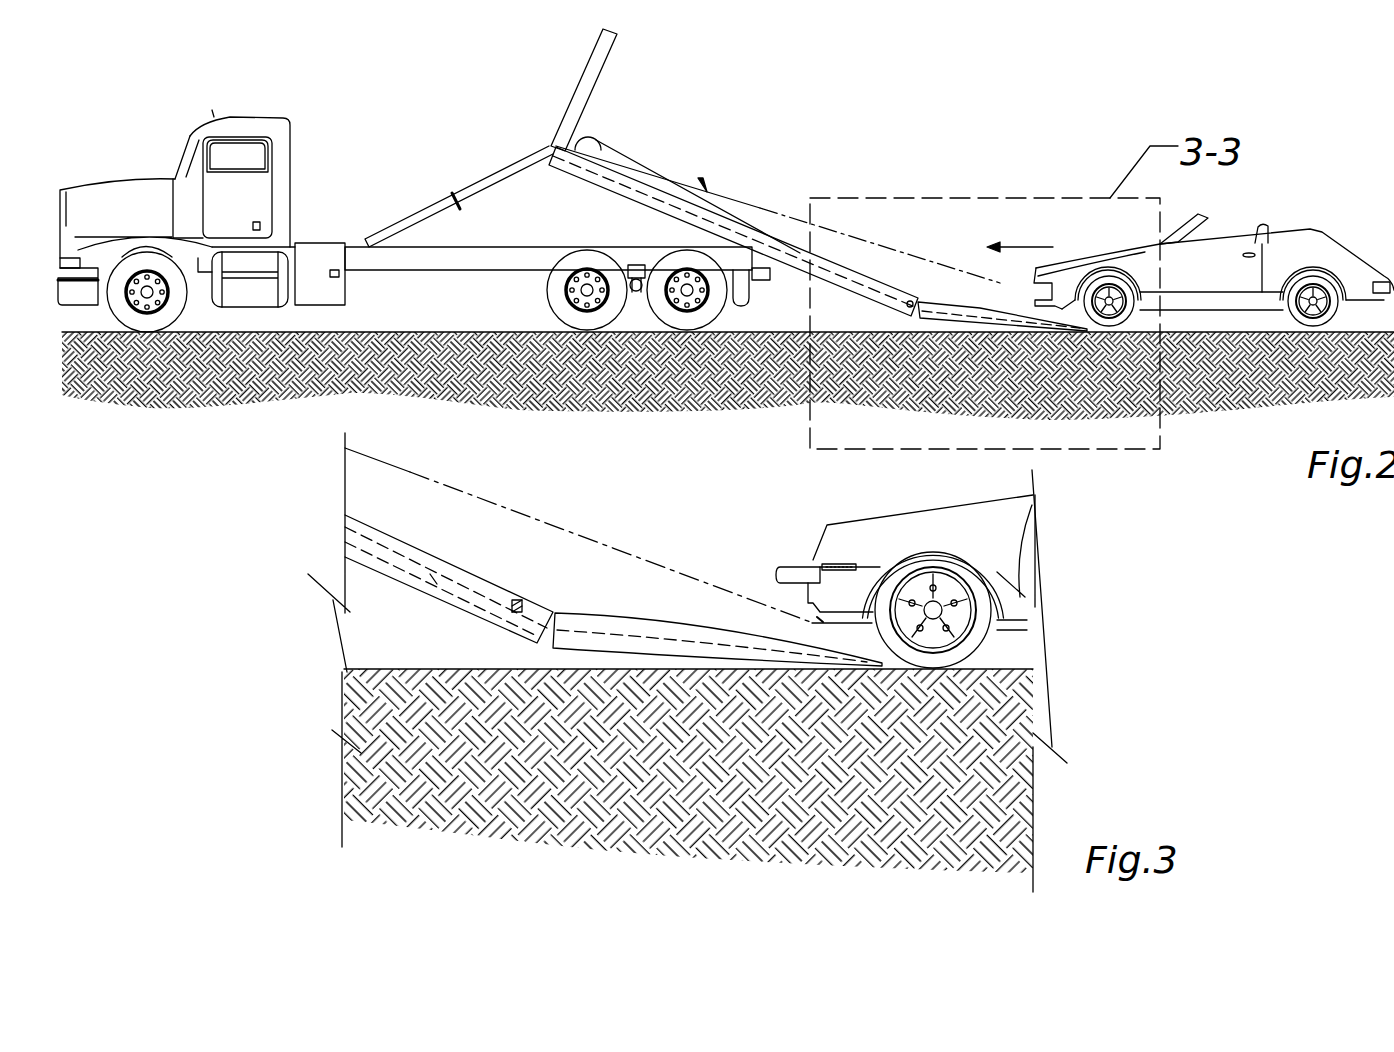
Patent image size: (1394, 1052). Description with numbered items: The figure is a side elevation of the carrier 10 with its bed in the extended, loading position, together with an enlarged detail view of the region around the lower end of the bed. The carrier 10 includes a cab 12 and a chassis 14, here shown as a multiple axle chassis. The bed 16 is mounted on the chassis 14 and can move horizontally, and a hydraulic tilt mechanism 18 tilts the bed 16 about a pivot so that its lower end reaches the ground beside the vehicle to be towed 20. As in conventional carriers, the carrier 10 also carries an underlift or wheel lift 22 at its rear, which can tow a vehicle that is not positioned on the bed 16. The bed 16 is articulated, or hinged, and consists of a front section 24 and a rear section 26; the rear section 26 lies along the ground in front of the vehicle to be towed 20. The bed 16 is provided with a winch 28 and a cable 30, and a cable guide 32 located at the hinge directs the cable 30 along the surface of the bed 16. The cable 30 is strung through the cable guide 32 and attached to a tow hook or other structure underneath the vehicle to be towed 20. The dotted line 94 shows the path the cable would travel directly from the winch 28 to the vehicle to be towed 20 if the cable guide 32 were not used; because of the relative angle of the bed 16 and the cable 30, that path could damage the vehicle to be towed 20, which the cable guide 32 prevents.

In FIG. 2, the carrier 10 is at (425, 198).
In FIG. 2, the cab 12 is at (215, 116).
In FIG. 2, the chassis 14 is at (438, 262).
In FIG. 2, the bed 16 is at (703, 183).
In FIG. 2, the hydraulic tilt mechanism 18 is at (452, 196).
In FIG. 2, the vehicle to be towed 20 is at (1340, 243).
In FIG. 3, the vehicle to be towed 20 is at (897, 581).
In FIG. 2, the underlift or wheel lift 22 is at (750, 298).
In FIG. 2, the front section 24 is at (733, 225).
In FIG. 3, the front section 24 is at (449, 579).
In FIG. 2, the rear section 26 is at (987, 305).
In FIG. 3, the rear section 26 is at (607, 623).
In FIG. 2, the winch 28 is at (592, 139).
In FIG. 2, the cable 30 is at (627, 167).
In FIG. 2, the cable guide 32 is at (902, 298).
In FIG. 3, the cable guide 32 is at (520, 593).
In FIG. 2, the dotted line 94 is at (902, 247).
In FIG. 3, the dotted line 94 is at (540, 517).